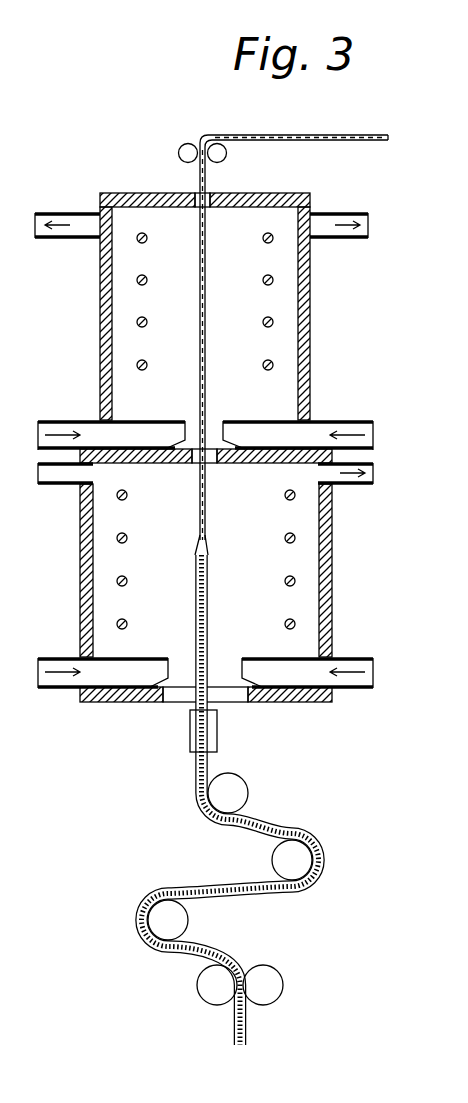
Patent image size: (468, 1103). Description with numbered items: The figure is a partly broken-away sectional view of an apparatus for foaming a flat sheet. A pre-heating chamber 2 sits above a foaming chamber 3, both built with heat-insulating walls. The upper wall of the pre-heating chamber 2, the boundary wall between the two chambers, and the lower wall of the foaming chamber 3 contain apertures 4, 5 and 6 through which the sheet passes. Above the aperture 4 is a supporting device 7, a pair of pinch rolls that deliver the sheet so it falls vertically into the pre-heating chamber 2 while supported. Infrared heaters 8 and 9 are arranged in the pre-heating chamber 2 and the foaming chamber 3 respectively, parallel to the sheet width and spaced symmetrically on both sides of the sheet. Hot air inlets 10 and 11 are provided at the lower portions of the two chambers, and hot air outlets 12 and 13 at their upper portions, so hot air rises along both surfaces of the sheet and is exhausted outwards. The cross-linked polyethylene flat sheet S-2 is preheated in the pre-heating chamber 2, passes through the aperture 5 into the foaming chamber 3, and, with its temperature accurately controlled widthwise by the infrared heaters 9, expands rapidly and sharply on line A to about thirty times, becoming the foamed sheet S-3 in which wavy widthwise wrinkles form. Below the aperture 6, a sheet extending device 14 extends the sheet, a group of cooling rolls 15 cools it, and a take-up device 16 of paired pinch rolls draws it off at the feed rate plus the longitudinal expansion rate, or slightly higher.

The pre-heating chamber 2 is at (118, 268).
The foaming chamber 3 is at (100, 540).
The aperture 4 is at (197, 192).
The aperture 5 is at (206, 465).
The aperture 6 is at (180, 695).
The supporting device 7 is at (189, 143).
The infrared heaters 8 is at (143, 322).
The infrared heaters 9 is at (123, 580).
The hot air inlet 10 is at (320, 437).
The hot air inlet 11 is at (341, 690).
The hot air outlet 12 is at (325, 228).
The hot air outlet 13 is at (351, 485).
The sheet extending device 14 is at (240, 739).
The cooling rolls 15 is at (240, 795).
The take-up device 16 is at (272, 985).
The line A is at (208, 533).
The flat sheet S-2 is at (300, 136).
The flat sheet S-3 is at (209, 616).